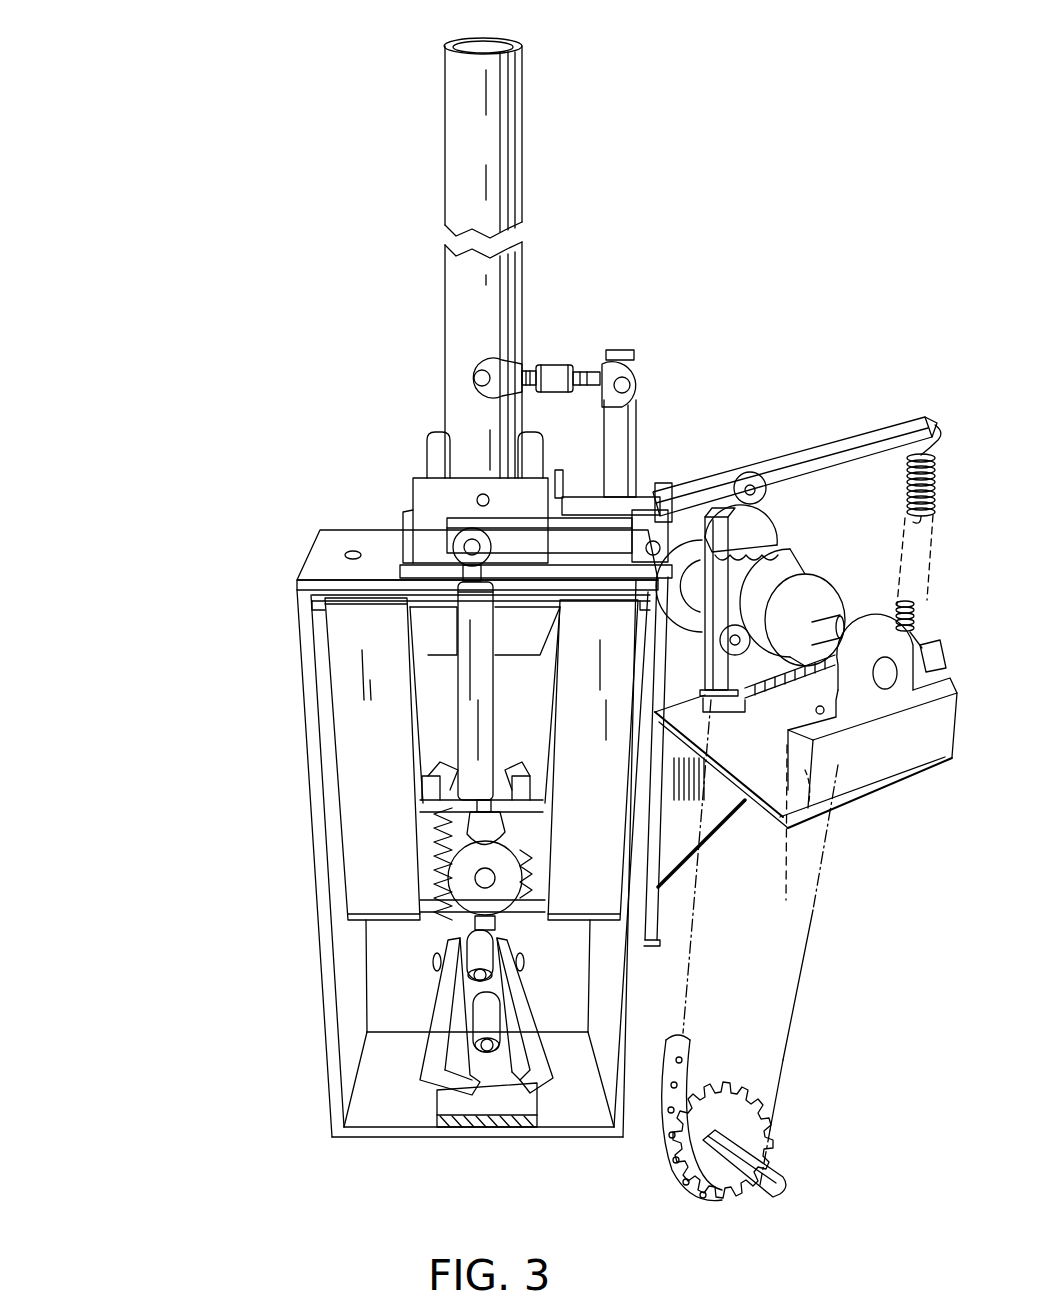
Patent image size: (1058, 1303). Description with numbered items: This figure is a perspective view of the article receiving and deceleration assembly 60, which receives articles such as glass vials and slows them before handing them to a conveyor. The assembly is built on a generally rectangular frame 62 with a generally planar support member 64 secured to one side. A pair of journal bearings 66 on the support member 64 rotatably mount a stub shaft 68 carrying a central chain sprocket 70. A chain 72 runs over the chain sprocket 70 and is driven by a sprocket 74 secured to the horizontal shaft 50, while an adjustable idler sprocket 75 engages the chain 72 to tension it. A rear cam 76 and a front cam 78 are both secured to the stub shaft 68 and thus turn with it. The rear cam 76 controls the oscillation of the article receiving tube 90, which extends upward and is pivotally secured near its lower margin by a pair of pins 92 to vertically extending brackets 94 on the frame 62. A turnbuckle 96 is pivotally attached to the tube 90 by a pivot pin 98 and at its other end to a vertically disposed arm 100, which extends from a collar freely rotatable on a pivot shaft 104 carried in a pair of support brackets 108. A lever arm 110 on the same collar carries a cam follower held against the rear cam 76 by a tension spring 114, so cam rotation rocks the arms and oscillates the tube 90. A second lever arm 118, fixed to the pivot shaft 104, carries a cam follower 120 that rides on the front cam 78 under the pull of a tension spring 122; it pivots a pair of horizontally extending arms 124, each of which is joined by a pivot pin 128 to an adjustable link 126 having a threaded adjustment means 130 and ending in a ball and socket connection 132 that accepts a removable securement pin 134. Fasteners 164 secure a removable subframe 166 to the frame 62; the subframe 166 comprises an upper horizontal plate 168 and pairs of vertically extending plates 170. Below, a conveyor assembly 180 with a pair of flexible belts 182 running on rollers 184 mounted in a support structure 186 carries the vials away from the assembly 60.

The horizontal shaft 50 is at (745, 1187).
The article receiving and deceleration assembly 60 is at (692, 246).
The frame 62 is at (638, 992).
The support member 64 is at (857, 802).
The journal bearings 66 is at (890, 756).
The stub shaft 68 is at (840, 622).
The chain sprocket 70 is at (786, 551).
The chain 72 is at (803, 973).
The sprocket 74 is at (752, 1128).
The adjustable idler sprocket 75 is at (777, 822).
The rear cam 76 is at (758, 524).
The front cam 78 is at (815, 573).
The article receiving tube 90 is at (520, 200).
The pins 92 is at (478, 497).
The vertically extending brackets 94 is at (540, 436).
The turnbuckle 96 is at (553, 368).
The pivot pin 98 is at (465, 373).
The vertically disposed arm 100 is at (637, 434).
The pivot shaft 104 is at (652, 556).
The support brackets 108 is at (578, 500).
The lever arm 110 is at (822, 443).
The tension spring 114 is at (906, 488).
The second lever arm 118 is at (708, 681).
The cam follower 120 is at (732, 640).
The tension spring 122 is at (918, 640).
The horizontally extending arms 124 is at (545, 548).
The adjustable links 126 is at (473, 735).
The pivot pins 128 is at (468, 547).
The threaded adjustment means 130 is at (472, 818).
The ball and socket connection 132 is at (445, 831).
The securement pin 134 is at (490, 880).
The fasteners 164 is at (344, 555).
The subframe 166 is at (290, 711).
The upper horizontal plate 168 is at (445, 606).
The vertically extending plates 170 is at (402, 893).
The conveyor assembly 180 is at (445, 1148).
The flexible belts 182 is at (522, 1083).
The rollers 184 is at (434, 968).
The support structure 186 is at (490, 1117).